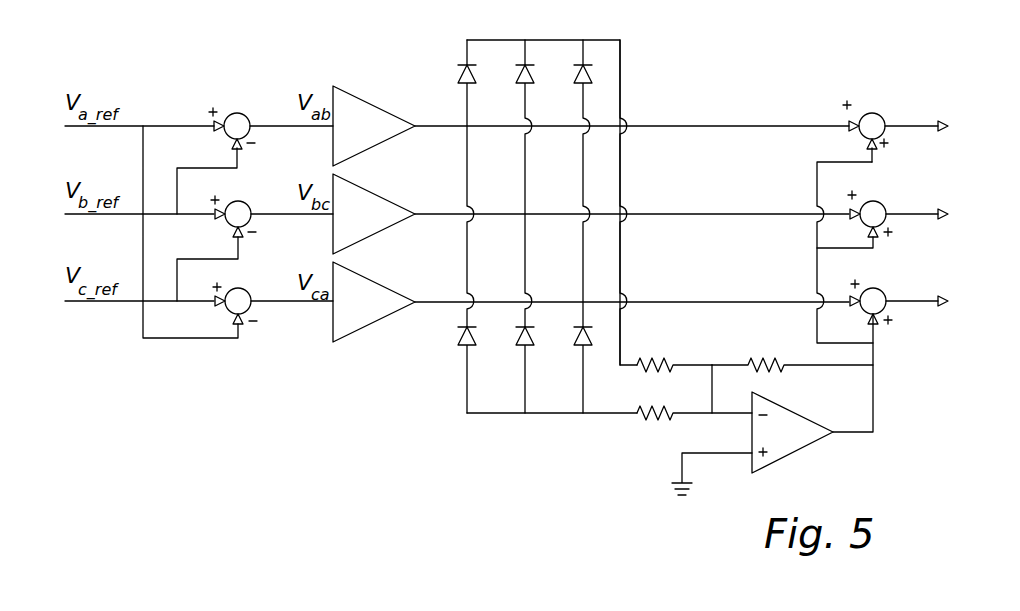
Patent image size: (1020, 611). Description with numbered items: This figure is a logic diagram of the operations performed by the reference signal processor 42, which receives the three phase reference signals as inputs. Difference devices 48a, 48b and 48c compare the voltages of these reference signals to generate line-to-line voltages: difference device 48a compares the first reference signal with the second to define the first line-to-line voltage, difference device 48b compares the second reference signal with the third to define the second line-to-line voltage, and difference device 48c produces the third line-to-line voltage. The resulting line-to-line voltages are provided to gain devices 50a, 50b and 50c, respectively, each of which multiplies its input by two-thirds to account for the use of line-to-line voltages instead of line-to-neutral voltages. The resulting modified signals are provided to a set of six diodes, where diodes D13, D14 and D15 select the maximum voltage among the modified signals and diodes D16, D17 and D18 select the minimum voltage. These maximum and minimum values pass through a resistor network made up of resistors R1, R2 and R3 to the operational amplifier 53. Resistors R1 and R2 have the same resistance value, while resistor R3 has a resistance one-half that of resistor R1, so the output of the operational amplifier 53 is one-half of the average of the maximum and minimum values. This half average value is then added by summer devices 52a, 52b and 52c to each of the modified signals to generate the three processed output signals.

The reference signal processor 42 is at (200, 90).
The difference device 48a is at (240, 113).
The difference device 48b is at (241, 201).
The difference device 48c is at (242, 288).
The gain device 50a is at (372, 104).
The gain device 50b is at (386, 197).
The gain device 50c is at (392, 290).
The summer device 52a is at (867, 109).
The summer device 52b is at (869, 198).
The summer device 52c is at (862, 288).
The operational amplifier 53 is at (803, 448).
The diode D13 is at (453, 183).
The diode D14 is at (508, 183).
The diode D15 is at (566, 183).
The diode D16 is at (453, 370).
The diode D17 is at (508, 370).
The diode D18 is at (567, 370).
The resistor R1 is at (674, 353).
The resistor R2 is at (694, 402).
The resistor R3 is at (792, 350).